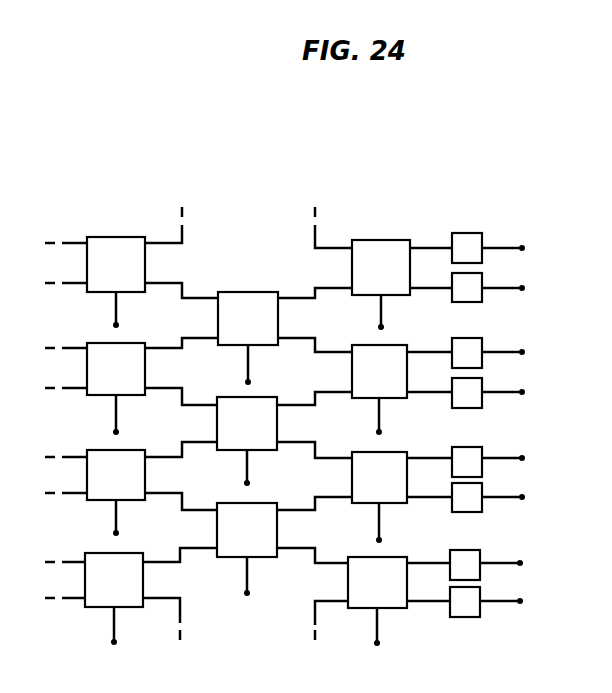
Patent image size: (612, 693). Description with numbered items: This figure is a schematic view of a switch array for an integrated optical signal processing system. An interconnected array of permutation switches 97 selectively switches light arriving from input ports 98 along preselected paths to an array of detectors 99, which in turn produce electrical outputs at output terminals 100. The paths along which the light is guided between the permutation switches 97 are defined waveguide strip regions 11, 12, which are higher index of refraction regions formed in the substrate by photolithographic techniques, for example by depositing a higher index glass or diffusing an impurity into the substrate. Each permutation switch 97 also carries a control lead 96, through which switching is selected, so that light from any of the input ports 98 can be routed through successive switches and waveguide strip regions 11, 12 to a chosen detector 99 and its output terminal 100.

The waveguide strip region 11 is at (184, 242).
The waveguide strip region 12 is at (165, 283).
The control lead 96 is at (113, 325).
The permutation switch 97 is at (128, 242).
The input port 98 is at (68, 243).
The detector 99 is at (468, 233).
The output terminal 100 is at (523, 248).